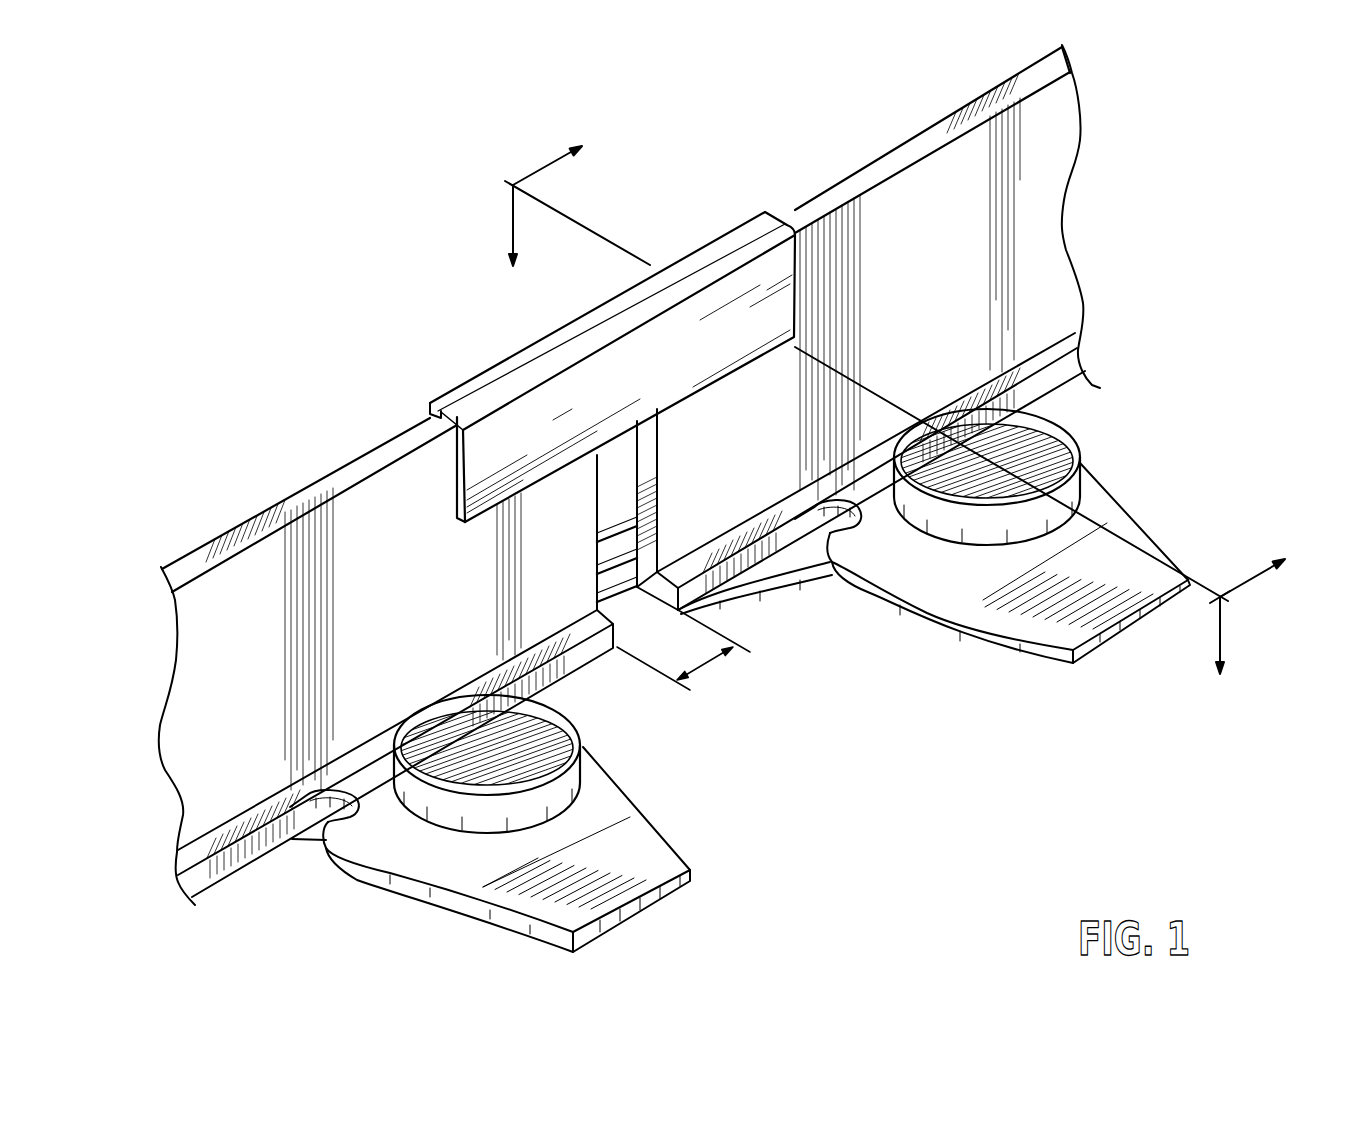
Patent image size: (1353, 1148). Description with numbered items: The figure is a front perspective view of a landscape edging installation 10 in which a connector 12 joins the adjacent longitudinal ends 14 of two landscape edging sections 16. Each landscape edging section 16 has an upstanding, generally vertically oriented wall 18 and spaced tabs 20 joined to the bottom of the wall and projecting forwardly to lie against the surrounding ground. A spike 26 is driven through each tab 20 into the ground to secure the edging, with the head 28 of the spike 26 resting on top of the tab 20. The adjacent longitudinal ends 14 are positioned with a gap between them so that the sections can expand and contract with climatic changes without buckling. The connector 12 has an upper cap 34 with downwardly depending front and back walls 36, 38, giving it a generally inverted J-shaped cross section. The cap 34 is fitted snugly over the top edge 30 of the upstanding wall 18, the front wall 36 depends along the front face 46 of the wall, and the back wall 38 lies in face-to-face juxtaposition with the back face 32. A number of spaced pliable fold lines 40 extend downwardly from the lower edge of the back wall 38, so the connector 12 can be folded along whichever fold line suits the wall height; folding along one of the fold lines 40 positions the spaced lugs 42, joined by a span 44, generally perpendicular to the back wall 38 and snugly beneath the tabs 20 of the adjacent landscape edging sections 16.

The landscape edging installation 10 is at (368, 214).
The connector 12 is at (589, 347).
The longitudinal end 14 is at (646, 517).
The landscape edging section 16 is at (613, 316).
The upstanding wall 18 is at (957, 279).
The tab 20 is at (740, 707).
The spike 26 is at (775, 606).
The head 28 is at (1057, 453).
The top edge 30 is at (940, 137).
The back face 32 is at (1003, 84).
The upper cap 34 is at (711, 256).
The front wall 36 is at (548, 427).
The back wall 38 is at (427, 412).
The pliable fold line 40 is at (629, 509).
The lug 42 is at (808, 553).
The span 44 is at (640, 607).
The front face 46 is at (1058, 290).